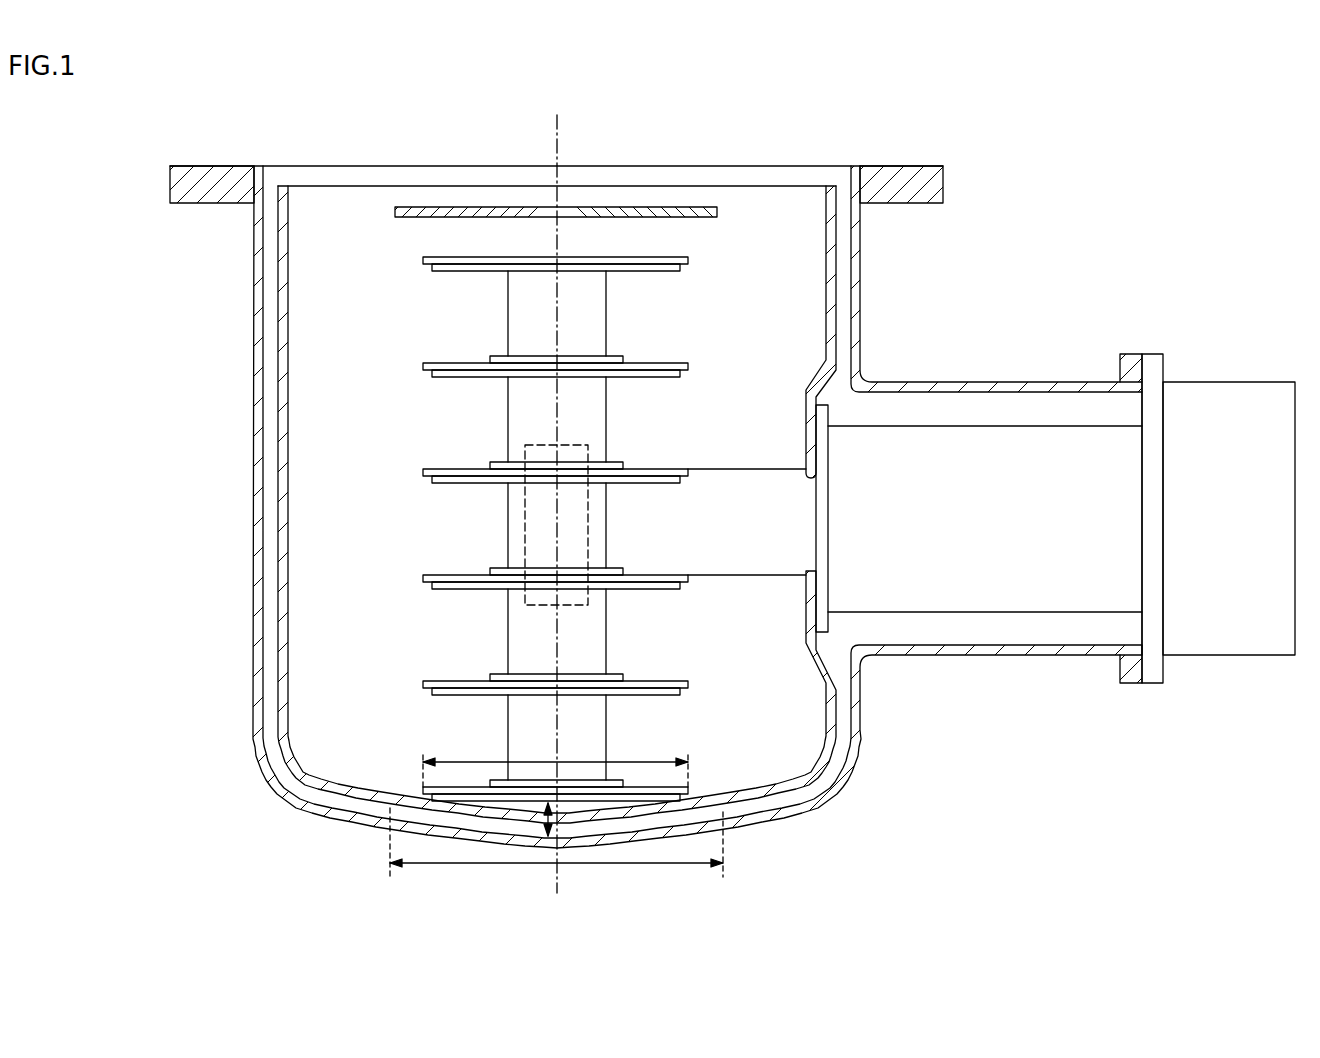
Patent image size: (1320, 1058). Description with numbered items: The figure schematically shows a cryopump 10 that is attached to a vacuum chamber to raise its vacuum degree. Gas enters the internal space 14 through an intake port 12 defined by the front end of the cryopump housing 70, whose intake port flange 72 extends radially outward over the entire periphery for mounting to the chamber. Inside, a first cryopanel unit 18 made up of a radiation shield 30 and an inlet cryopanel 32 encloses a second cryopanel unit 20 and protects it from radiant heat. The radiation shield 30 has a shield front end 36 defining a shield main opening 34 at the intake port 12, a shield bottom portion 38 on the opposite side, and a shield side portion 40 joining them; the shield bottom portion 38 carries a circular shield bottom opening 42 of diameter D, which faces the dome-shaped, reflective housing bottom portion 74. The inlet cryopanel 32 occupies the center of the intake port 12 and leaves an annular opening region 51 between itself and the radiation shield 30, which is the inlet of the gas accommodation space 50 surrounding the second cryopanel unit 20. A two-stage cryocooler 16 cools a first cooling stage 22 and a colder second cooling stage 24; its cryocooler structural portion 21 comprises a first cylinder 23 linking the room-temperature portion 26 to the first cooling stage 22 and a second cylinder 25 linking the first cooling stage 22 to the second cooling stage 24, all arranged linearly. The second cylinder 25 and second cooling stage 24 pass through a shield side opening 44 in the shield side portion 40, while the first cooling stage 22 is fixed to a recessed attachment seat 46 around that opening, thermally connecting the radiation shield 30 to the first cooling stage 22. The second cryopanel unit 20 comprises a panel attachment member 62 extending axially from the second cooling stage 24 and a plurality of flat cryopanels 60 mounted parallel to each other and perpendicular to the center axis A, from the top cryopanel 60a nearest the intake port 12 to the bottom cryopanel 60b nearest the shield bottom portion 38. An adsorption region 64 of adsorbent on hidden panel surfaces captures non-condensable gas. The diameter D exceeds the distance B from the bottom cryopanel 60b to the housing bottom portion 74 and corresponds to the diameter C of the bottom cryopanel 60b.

The cryopump 10 is at (660, 503).
The intake port 12 is at (556, 137).
The internal space 14 is at (783, 731).
The cryocooler 16 is at (1207, 374).
The first cryopanel unit 18 is at (660, 482).
The second cryopanel unit 20 is at (573, 527).
The cryocooler structural portion 21 is at (920, 671).
The first cooling stage 22 is at (832, 628).
The first cylinder 23 is at (1044, 614).
The second cooling stage 24 is at (536, 605).
The second cylinder 25 is at (756, 578).
The room-temperature portion 26 is at (1225, 657).
The radiation shield 30 is at (595, 503).
The inlet cryopanel 32 is at (660, 487).
The shield main opening 34 is at (414, 180).
The shield front end 36 is at (283, 184).
The shield bottom portion 38 is at (348, 793).
The shield side portion 40 is at (262, 397).
The shield bottom opening 42 is at (436, 814).
The shield side opening 44 is at (828, 478).
The attachment seat 46 is at (828, 435).
The gas accommodation space 50 is at (348, 465).
The opening region 51 is at (328, 210).
The cryopanel 60 is at (690, 368).
The top cryopanel 60a is at (690, 262).
The bottom cryopanel 60b is at (422, 789).
The panel attachment member 62 is at (608, 630).
The adsorption region 64 is at (622, 273).
The cryopump housing 70 is at (1050, 380).
The intake port flange 72 is at (214, 182).
The housing bottom portion 74 is at (755, 823).
The center axis A is at (560, 117).
The distance B is at (545, 826).
The diameter of the bottom cryopanel C is at (477, 760).
The diameter of the shield bottom opening D is at (593, 866).